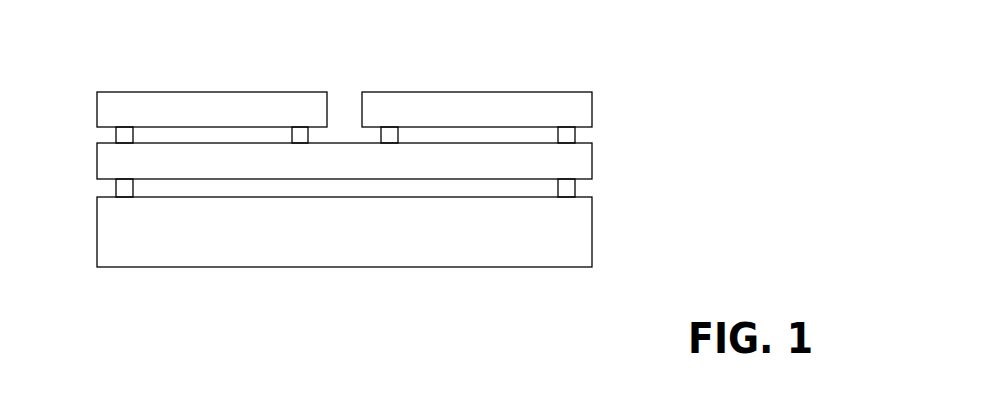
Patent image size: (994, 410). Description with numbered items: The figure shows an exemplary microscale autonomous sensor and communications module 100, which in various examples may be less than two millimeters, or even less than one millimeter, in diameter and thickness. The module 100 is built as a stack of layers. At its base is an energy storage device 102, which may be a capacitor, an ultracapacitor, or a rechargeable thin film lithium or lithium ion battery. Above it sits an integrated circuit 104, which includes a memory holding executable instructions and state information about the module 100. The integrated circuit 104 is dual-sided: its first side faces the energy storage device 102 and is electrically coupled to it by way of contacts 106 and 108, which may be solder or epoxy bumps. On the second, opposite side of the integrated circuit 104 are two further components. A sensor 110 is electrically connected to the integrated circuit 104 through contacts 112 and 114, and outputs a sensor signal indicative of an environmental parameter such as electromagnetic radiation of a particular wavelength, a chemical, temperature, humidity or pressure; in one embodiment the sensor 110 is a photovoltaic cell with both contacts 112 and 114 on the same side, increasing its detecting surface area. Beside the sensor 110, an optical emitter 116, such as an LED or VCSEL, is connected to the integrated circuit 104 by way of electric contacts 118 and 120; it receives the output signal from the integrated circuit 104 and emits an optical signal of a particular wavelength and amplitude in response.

The microscale autonomous sensor and communications module 100 is at (628, 55).
The energy storage device 102 is at (593, 233).
The integrated circuit 104 is at (593, 165).
The contact 106 is at (115, 188).
The contact 108 is at (575, 188).
The sensor 110 is at (142, 92).
The electrical contact 112 is at (115, 135).
The electrical contact 114 is at (300, 127).
The optical emitter 116 is at (487, 92).
The electric contact 118 is at (381, 143).
The electric contact 120 is at (575, 135).